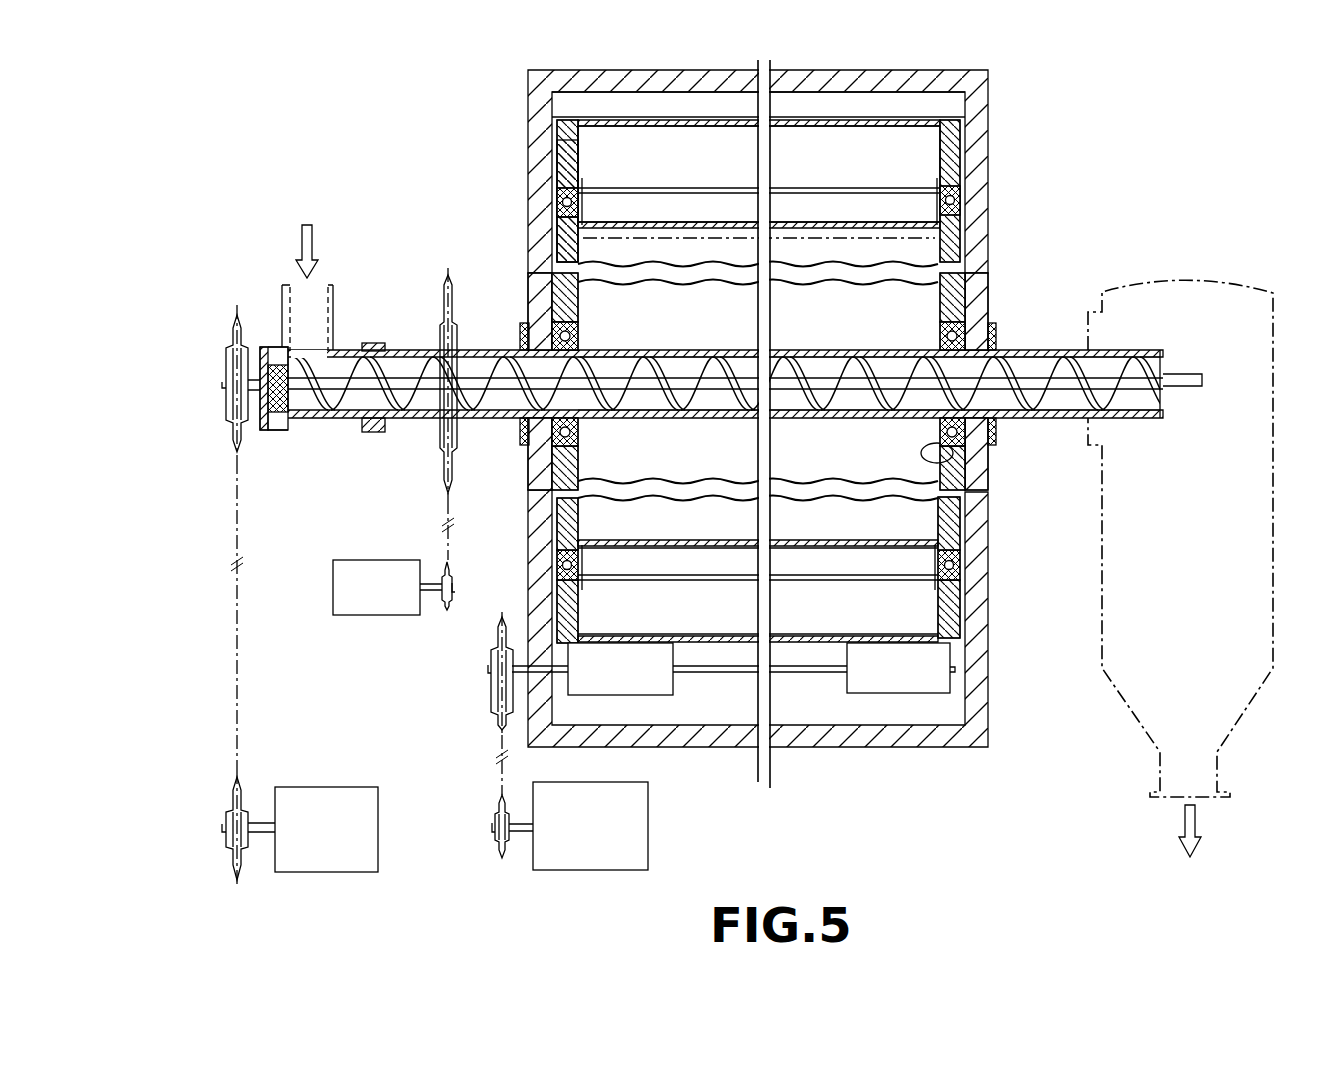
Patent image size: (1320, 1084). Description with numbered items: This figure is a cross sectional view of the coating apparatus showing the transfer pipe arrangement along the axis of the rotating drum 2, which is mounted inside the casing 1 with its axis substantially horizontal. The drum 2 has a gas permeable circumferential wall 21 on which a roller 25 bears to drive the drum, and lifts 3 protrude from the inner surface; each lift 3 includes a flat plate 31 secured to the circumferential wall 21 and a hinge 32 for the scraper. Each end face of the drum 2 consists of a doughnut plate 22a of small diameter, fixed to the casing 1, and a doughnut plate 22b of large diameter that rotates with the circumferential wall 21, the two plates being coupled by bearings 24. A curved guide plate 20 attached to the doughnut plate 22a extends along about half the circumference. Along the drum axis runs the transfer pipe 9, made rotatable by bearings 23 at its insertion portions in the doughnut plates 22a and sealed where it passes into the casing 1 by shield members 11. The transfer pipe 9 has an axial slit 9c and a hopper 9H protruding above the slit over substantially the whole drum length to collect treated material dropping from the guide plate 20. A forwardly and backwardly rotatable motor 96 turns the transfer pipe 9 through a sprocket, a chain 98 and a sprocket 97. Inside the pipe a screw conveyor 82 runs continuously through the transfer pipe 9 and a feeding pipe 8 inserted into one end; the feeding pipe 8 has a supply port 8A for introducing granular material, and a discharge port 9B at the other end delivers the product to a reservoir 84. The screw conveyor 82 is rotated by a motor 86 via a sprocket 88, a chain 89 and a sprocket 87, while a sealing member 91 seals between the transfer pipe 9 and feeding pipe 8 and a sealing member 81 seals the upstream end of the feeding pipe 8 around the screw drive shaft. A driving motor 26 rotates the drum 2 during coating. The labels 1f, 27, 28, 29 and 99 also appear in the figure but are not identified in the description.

The casing 1 is at (988, 78).
The housing top wall 1f is at (950, 104).
The rotating drum 2 is at (650, 113).
The lifts 3 is at (905, 167).
The guide plate 20 is at (832, 235).
The circumferential wall 21 is at (570, 130).
The doughnut plate of small diameter 22a is at (568, 235).
The doughnut plate of large diameter 22b is at (566, 162).
The bearings 23 is at (540, 322).
The bearings 24 is at (560, 200).
The roller 25 is at (655, 695).
The driving motor 26 is at (648, 838).
The gear 27 is at (492, 820).
The gear 28 is at (490, 660).
The drive shaft 29 is at (500, 740).
The flat plate 31 is at (950, 140).
The hinge 32 is at (962, 198).
The feeding pipe 8 is at (336, 348).
The supply port 8A is at (328, 290).
The sealing member 81 is at (270, 352).
The screw conveyor 82 is at (378, 434).
The reservoir 84 is at (1237, 278).
The motor 86 is at (378, 845).
The sprocket 87 is at (244, 800).
The sprocket 88 is at (232, 428).
The chain 89 is at (237, 610).
The transfer pipe 9 is at (402, 350).
The discharge port 9B is at (1163, 365).
The slit 9c is at (853, 348).
The hopper 9H is at (850, 234).
The sealing member 91 is at (372, 343).
The motor 96 is at (340, 598).
The sprocket 97 is at (455, 582).
The chain 98 is at (458, 450).
The shaft 99 is at (455, 522).
The shield members 11 is at (527, 330).